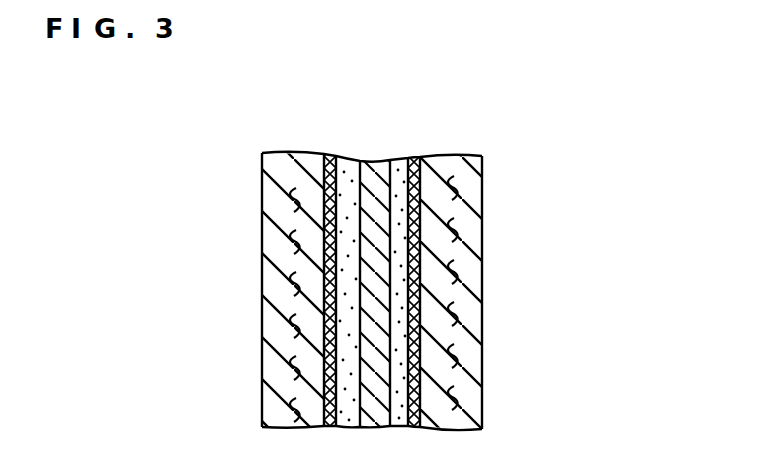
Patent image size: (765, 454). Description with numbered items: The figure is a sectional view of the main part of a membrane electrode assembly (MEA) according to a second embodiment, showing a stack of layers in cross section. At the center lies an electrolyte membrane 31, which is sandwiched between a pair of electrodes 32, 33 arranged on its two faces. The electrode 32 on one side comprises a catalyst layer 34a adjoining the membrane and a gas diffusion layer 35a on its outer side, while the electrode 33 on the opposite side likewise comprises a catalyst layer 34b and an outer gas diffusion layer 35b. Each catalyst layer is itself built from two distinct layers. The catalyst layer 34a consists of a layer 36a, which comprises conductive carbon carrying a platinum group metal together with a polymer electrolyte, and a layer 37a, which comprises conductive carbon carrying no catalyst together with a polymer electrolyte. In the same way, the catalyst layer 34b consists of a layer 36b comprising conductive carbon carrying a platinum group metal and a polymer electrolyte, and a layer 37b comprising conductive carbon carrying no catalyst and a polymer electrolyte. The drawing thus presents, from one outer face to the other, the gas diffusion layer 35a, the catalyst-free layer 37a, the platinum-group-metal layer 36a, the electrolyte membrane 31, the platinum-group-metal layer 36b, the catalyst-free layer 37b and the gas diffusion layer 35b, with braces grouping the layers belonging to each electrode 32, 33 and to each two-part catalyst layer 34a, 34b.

The electrolyte membrane 31 is at (376, 168).
The electrode 32 is at (362, 63).
The electrode 33 is at (572, 63).
The catalyst layer 34a is at (387, 103).
The catalyst layer 34b is at (508, 104).
The gas diffusion layer 35a is at (285, 162).
The gas diffusion layer 35b is at (466, 178).
The layer comprising conductive carbon carrying a platinum group metal and a polymer 36a is at (344, 164).
The layer comprising conductive carbon carrying a platinum group metal and a polymer 36b is at (400, 163).
The layer comprising conductive carbon carrying no catalyst and a polymer electrolyt 37a is at (331, 158).
The layer comprising conductive carbon carrying no catalyst and a polymer electrolyt 37b is at (417, 160).